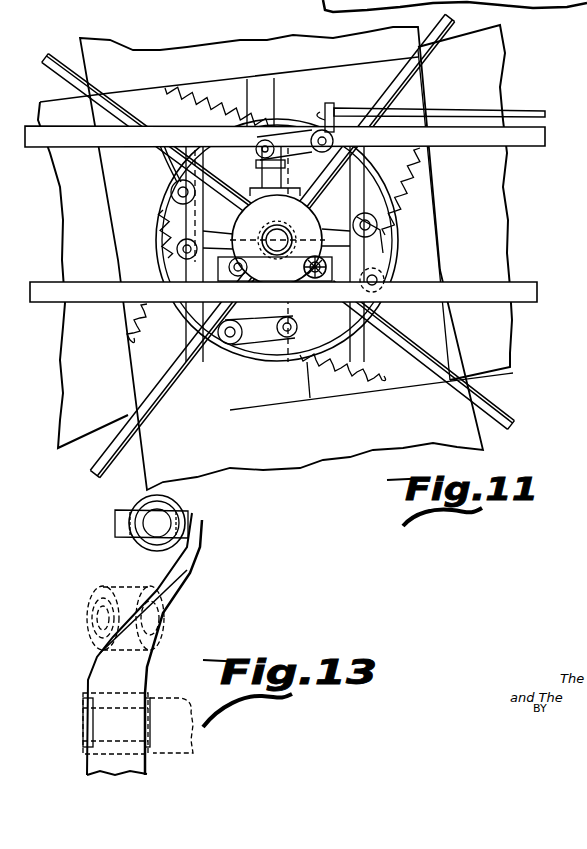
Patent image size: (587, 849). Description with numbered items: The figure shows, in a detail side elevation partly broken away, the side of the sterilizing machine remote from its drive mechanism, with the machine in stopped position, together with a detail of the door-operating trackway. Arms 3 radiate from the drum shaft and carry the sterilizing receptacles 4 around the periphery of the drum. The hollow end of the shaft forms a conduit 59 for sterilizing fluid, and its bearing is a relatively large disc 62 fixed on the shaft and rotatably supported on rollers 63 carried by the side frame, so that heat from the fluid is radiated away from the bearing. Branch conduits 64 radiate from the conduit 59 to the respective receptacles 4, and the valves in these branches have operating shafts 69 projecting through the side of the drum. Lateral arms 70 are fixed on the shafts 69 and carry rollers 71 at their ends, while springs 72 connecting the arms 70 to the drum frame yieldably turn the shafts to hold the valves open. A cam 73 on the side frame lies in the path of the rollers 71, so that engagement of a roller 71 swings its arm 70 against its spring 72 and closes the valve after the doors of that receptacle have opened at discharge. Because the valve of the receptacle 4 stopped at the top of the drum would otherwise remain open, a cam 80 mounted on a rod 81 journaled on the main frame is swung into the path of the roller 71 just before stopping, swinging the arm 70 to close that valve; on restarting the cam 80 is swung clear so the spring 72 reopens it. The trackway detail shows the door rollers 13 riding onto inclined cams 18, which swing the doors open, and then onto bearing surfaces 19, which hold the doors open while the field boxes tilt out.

In FIG. 11, the arms 3 is at (158, 389).
In FIG. 11, the sterilizing receptacles 4 is at (281, 258).
In FIG. 11, the conduit 59 is at (275, 236).
In FIG. 11, the disc 62 is at (303, 207).
In FIG. 11, the rollers 63 is at (312, 273).
In FIG. 11, the branch conduits 64 is at (262, 172).
In FIG. 11, the operating shafts 69 is at (296, 338).
In FIG. 11, the lateral arms 70 is at (289, 151).
In FIG. 11, the rollers 71 is at (230, 340).
In FIG. 11, the springs 72 is at (440, 182).
In FIG. 11, the cam 73 is at (353, 337).
In FIG. 11, the cam 80 is at (314, 114).
In FIG. 11, the rod 81 is at (473, 88).
In FIG. 13, the rollers 13 is at (145, 552).
In FIG. 13, the cams 18 is at (182, 568).
In FIG. 13, the bearing surfaces 19 is at (110, 687).